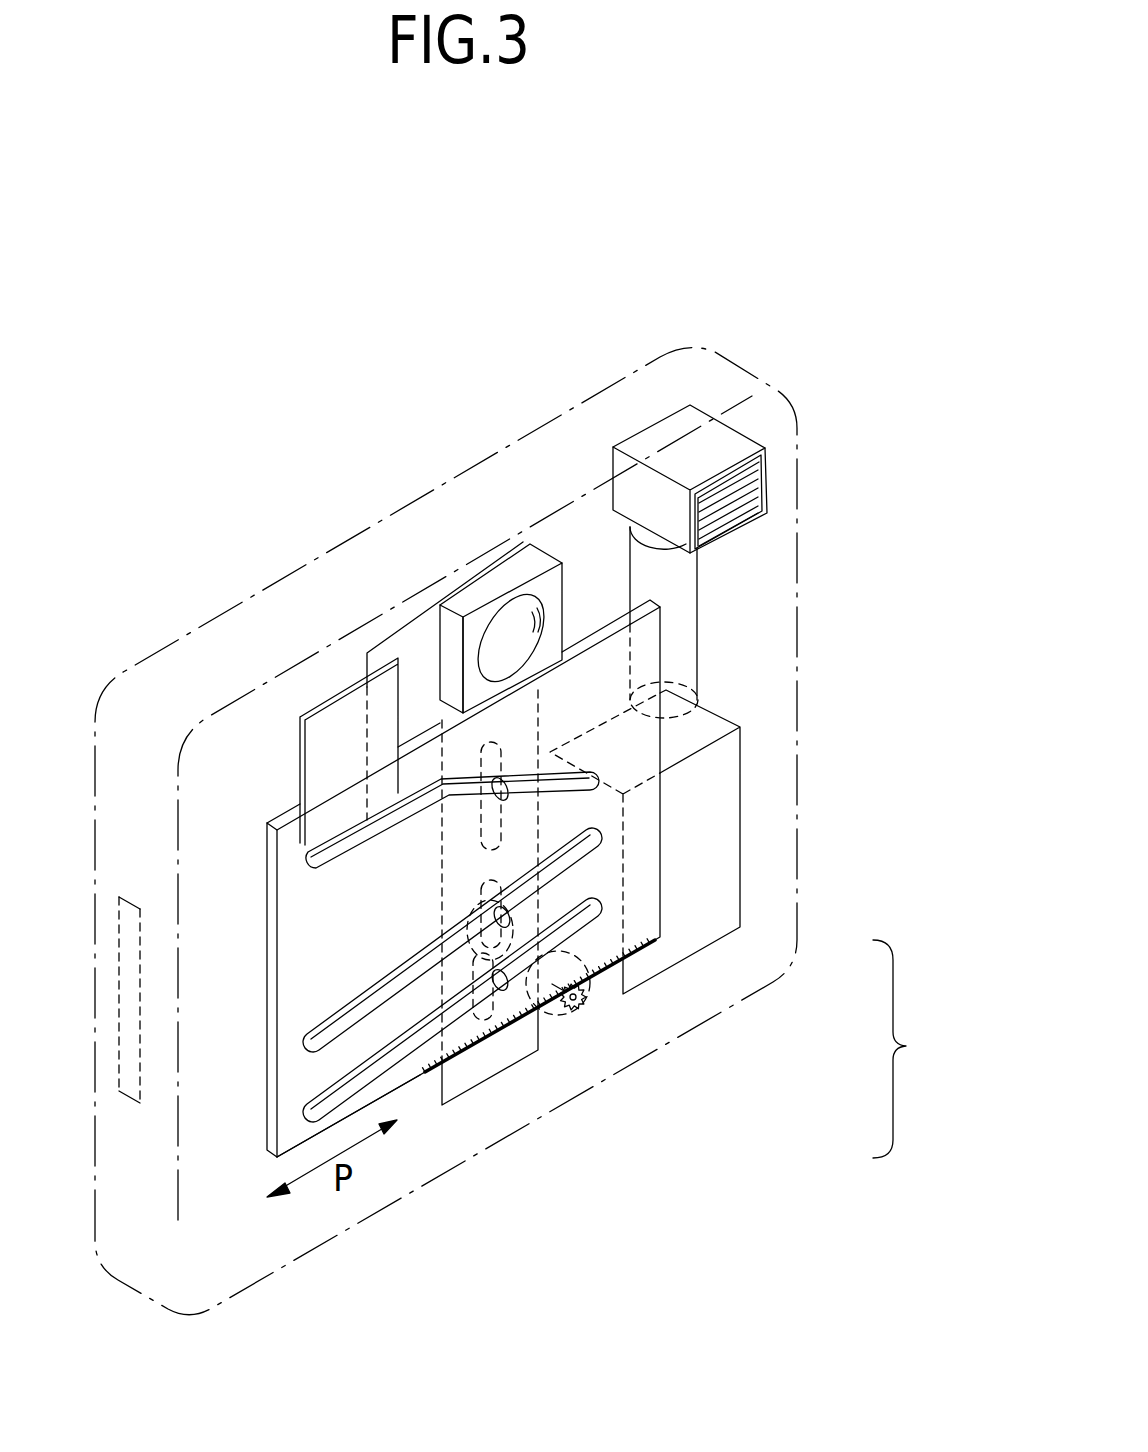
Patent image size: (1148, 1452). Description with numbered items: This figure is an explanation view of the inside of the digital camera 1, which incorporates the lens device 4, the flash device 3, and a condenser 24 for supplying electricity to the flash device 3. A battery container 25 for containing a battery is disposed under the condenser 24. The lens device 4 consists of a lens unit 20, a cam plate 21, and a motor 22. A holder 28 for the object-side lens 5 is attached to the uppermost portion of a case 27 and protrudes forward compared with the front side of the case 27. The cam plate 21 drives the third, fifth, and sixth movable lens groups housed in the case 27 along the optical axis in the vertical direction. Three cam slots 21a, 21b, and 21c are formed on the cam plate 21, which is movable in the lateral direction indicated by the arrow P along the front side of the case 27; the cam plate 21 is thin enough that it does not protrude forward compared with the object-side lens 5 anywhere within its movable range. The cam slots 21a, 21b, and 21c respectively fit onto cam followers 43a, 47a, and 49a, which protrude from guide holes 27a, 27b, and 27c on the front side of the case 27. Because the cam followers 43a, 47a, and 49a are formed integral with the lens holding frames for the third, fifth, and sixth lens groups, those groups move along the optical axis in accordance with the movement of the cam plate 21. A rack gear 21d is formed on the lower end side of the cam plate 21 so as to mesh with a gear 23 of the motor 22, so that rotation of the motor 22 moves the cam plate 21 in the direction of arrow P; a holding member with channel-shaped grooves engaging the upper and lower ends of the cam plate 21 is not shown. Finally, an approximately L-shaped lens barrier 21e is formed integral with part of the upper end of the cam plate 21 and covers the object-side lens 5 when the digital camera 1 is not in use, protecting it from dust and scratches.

The digital camera 1 is at (690, 349).
The flash device 3 is at (766, 498).
The lens device 4 is at (906, 1049).
The object-side lens 5 is at (508, 640).
The lens unit 20 is at (517, 1062).
The cam plate 21 is at (666, 906).
The cam slot 21a is at (311, 868).
The cam slot 21b is at (330, 1035).
The cam slot 21c is at (333, 1082).
The rack gear 21d is at (447, 1128).
The lens barrier 21e is at (337, 693).
The motor 22 is at (563, 1000).
The gear 23 is at (585, 1003).
The condenser 24 is at (698, 628).
The battery container 25 is at (741, 818).
The case 27 is at (393, 622).
The guide hole 27a is at (478, 823).
The guide hole 27b is at (478, 900).
The guide hole 27c is at (497, 1040).
The holder 28 is at (645, 585).
The cam follower 43a is at (507, 795).
The cam follower 47a is at (508, 908).
The cam follower 49a is at (506, 988).